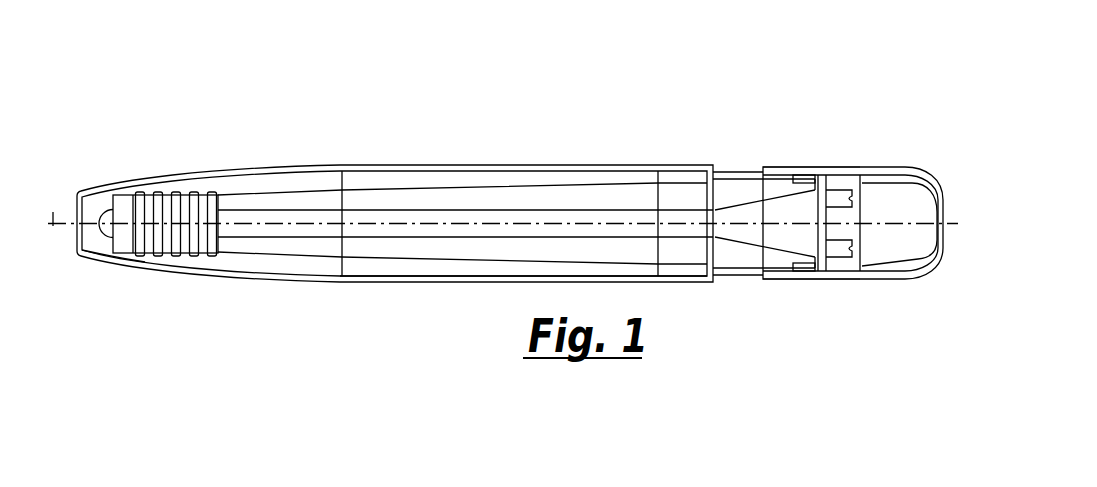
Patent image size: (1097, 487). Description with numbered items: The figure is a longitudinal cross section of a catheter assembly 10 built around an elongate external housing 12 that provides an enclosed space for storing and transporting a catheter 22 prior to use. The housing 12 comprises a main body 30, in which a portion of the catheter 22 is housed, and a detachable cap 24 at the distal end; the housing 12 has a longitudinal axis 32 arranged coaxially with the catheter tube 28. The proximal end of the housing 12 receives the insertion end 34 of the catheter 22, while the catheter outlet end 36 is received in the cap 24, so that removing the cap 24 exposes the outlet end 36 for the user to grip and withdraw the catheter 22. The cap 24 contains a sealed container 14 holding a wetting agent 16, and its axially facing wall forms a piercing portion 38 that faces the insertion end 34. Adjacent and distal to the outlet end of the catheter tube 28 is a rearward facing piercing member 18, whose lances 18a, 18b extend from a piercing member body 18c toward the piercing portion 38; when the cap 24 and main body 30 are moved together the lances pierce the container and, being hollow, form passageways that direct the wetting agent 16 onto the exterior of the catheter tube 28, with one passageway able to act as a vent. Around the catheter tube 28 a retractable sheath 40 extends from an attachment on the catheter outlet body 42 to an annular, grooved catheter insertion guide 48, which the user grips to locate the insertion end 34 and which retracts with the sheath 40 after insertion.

The catheter assembly 10 is at (165, 101).
The external housing 12 is at (268, 296).
The sealed container 14 is at (890, 279).
The wetting agent 16 is at (907, 208).
The piercing member 18 is at (873, 65).
The lance 18a is at (851, 210).
The lance 18b is at (833, 250).
The piercing member body 18c is at (815, 178).
The catheter 22 is at (388, 196).
The cap 24 is at (820, 280).
The catheter tube 28 is at (575, 217).
The main body 30 is at (460, 282).
The longitudinal axis 32 is at (50, 216).
The insertion end 34 is at (143, 292).
The catheter outlet end 36 is at (739, 292).
The piercing portion 38 is at (862, 213).
The retractable sheath 40 is at (482, 188).
The catheter outlet body 42 is at (687, 195).
The catheter insertion guide 48 is at (135, 255).